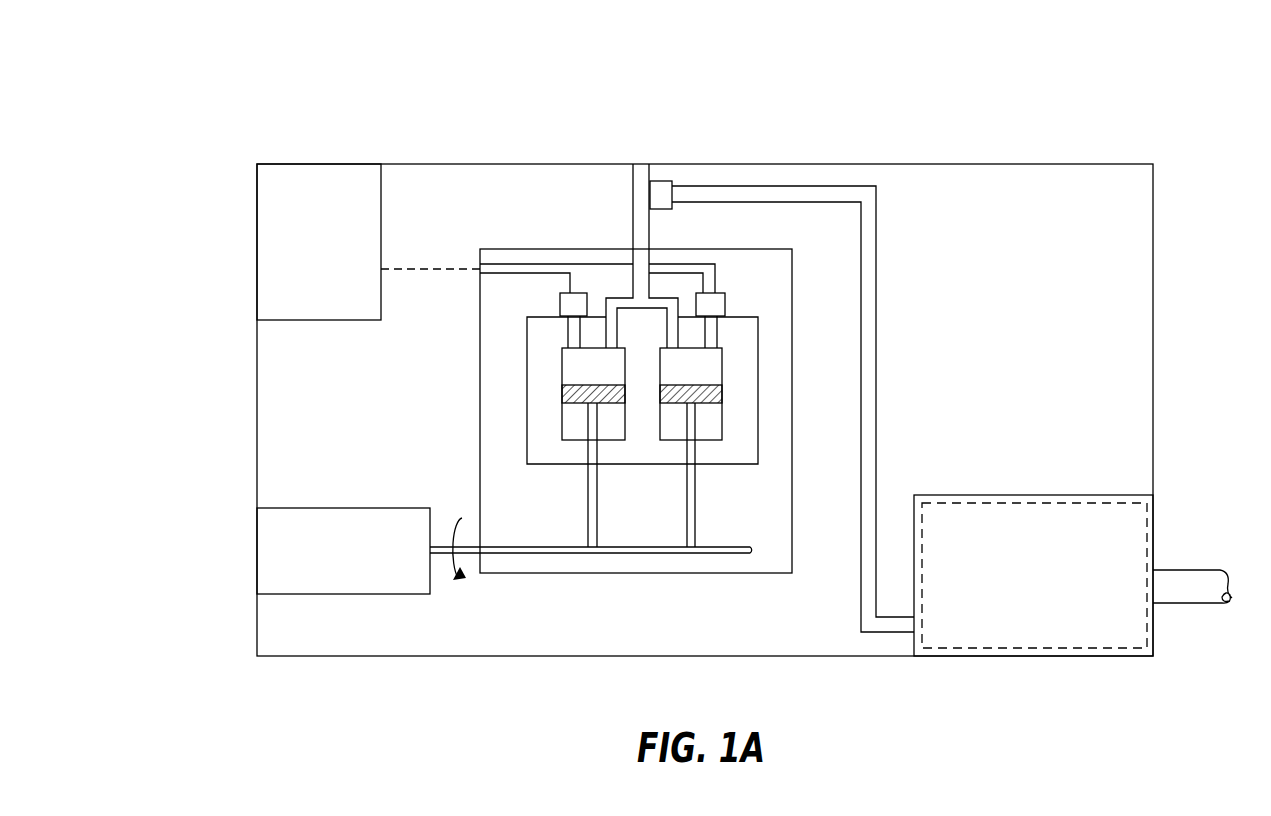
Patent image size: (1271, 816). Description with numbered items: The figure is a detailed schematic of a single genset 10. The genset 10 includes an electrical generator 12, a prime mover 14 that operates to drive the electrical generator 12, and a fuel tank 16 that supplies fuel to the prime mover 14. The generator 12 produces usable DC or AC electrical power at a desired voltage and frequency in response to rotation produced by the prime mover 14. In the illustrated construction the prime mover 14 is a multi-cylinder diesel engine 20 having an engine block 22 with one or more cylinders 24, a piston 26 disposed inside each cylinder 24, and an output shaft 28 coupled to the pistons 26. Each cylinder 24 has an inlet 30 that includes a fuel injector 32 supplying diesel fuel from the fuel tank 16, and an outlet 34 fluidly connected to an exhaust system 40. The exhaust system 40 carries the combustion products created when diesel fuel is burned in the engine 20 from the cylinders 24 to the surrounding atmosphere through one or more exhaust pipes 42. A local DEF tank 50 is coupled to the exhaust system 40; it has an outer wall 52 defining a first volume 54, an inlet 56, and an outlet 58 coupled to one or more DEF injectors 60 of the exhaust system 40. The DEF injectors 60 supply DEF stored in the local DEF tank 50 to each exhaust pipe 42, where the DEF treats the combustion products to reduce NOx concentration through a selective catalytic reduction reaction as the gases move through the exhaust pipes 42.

The genset 10 is at (896, 90).
The electrical generator 12 is at (283, 547).
The prime mover 14 is at (452, 470).
The fuel tank 16 is at (360, 203).
The multi-cylinder diesel engine 20 is at (498, 395).
The engine block 22 is at (758, 395).
The cylinder 24 is at (723, 368).
The piston 26 is at (707, 398).
The output shaft 28 is at (597, 506).
The inlet 30 is at (568, 330).
The fuel injector 32 is at (558, 300).
The outlet 34 is at (680, 336).
The exhaust system 40 is at (622, 220).
The exhaust pipe 42 is at (633, 192).
The local DEF tank 50 is at (1033, 573).
The outer wall 52 is at (1050, 493).
The first volume 54 is at (1003, 650).
The inlet 56 is at (1155, 587).
The outlet 58 is at (917, 625).
The DEF injector 60 is at (661, 186).